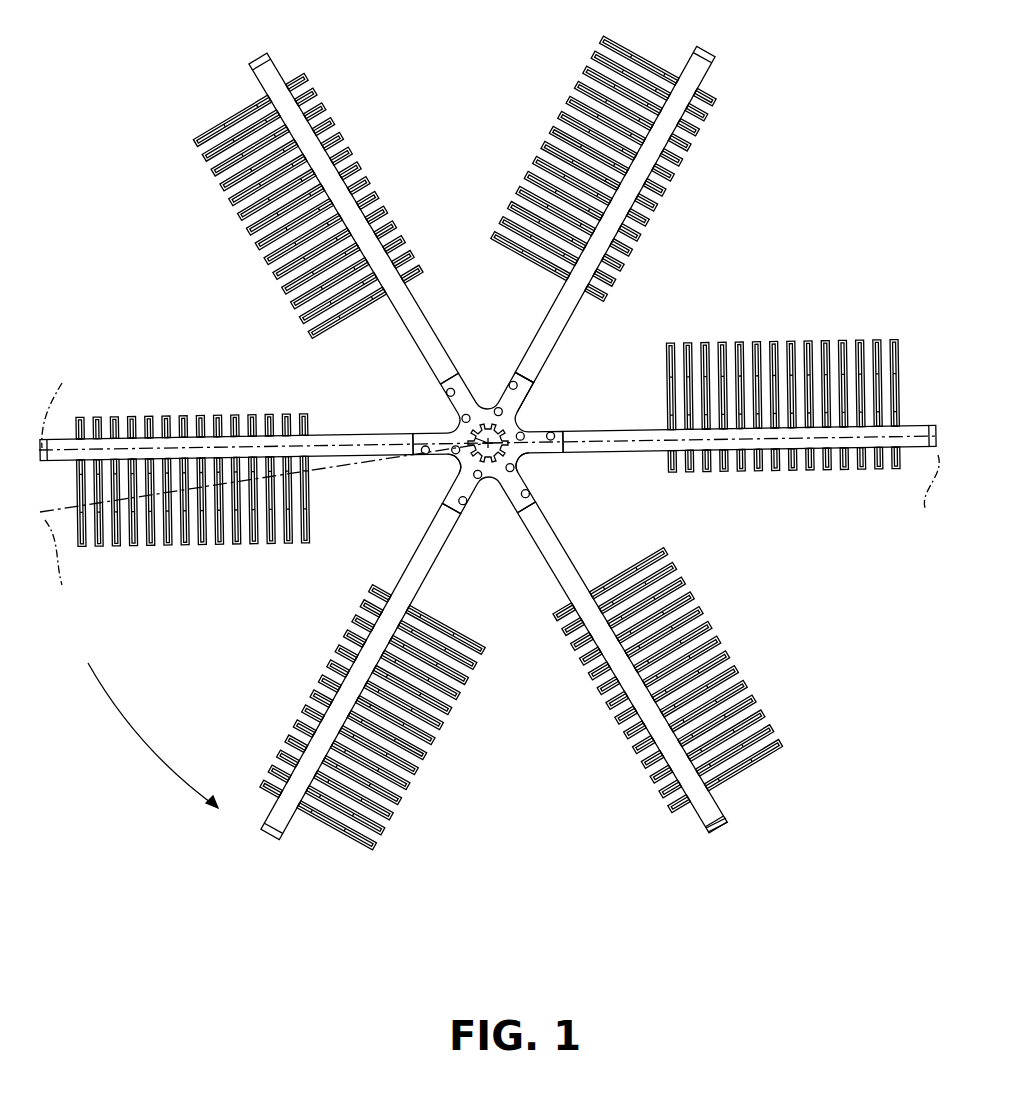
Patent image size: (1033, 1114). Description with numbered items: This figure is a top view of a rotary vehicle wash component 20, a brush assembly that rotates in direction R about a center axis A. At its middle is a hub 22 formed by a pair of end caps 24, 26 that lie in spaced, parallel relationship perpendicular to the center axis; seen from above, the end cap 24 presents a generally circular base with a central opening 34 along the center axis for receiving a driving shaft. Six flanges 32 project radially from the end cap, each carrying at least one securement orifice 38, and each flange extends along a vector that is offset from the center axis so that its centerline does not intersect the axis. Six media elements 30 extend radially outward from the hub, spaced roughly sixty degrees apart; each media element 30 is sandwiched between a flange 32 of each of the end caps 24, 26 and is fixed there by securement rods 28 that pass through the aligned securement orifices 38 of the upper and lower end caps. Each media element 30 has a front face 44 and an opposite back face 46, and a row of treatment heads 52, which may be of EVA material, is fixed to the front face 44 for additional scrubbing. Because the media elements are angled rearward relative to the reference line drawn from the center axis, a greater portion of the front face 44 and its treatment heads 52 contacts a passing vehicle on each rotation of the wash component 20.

The rotary vehicle wash component 20 is at (797, 565).
The hub 22 is at (518, 462).
The end cap 24 is at (492, 480).
The end cap 26 is at (517, 425).
The securement rod 28 is at (452, 393).
The media element 30 is at (268, 83).
The flange 32 is at (527, 495).
The opening 34 is at (523, 455).
The securement orifice 38 is at (457, 462).
The front face 44 is at (712, 795).
The back face 46 is at (703, 817).
The treatment head 52 is at (780, 742).